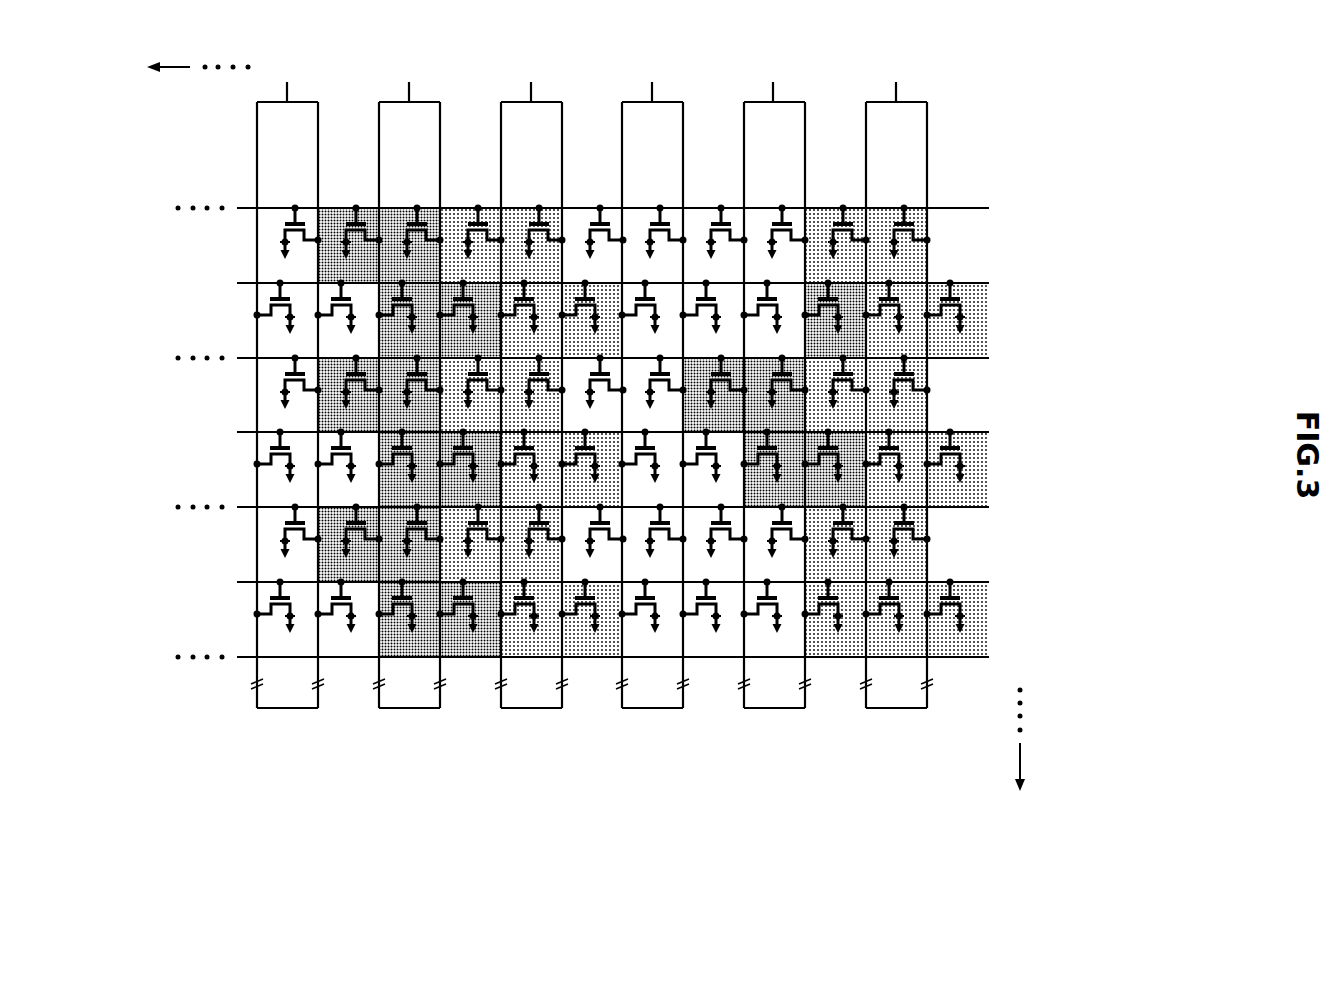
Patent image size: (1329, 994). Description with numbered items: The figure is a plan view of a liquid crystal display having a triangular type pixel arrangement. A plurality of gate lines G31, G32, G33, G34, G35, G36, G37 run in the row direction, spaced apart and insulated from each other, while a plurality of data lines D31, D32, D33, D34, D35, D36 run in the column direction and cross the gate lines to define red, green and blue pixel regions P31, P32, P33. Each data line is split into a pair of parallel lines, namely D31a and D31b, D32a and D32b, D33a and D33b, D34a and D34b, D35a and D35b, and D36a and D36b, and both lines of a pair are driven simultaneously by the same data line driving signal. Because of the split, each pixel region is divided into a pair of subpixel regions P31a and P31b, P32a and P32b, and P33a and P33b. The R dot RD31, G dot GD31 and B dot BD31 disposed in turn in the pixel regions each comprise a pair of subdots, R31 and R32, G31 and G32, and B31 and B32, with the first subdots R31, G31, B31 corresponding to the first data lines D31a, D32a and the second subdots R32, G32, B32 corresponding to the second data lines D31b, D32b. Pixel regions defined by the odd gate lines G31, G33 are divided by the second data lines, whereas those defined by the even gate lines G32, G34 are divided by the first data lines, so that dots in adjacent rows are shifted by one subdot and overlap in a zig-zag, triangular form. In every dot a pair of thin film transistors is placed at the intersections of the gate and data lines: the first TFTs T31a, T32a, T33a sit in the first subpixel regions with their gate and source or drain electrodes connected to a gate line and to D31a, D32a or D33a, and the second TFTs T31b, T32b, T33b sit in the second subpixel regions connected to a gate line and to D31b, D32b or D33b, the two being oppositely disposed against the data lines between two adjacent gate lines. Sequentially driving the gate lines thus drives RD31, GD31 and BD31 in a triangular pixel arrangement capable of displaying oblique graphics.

The data line D31 is at (896, 378).
The data line D32 is at (774, 378).
The data line D33 is at (652, 378).
The data line D34 is at (531, 378).
The data line D35 is at (409, 378).
The data line D36 is at (287, 378).
The first data line D31a is at (926, 153).
The second data line D31b is at (864, 127).
The first data line D32a is at (804, 153).
The second data line D32b is at (742, 127).
The first data line D33a is at (682, 153).
The second data line D33b is at (621, 127).
The first data line D34a is at (561, 153).
The second data line D34b is at (499, 127).
The first data line D35a is at (439, 153).
The second data line D35b is at (377, 127).
The first data line D36a is at (317, 153).
The second data line D36b is at (255, 127).
The gate line G31 is at (609, 276).
The gate line G32 is at (639, 308).
The gate line G33 is at (609, 359).
The gate line G34 is at (639, 433).
The gate line G35 is at (609, 508).
The gate line G36 is at (639, 583).
The gate line G37 is at (609, 658).
The first TFT T31a is at (887, 217).
The second TFT T31b is at (825, 217).
The first TFT T32a is at (764, 217).
The second TFT T32b is at (703, 217).
The first TFT T33a is at (642, 217).
The second TFT T33b is at (581, 217).
The first B subdot B31 is at (643, 308).
The second B subdot B32 is at (582, 308).
The first R subdot R31 is at (887, 308).
The second R subdot R32 is at (826, 308).
The B dot BD31 is at (700, 362).
The R dot RD31 is at (895, 347).
The G dot GD31 is at (810, 378).
The pixel column P31 is at (558, 805).
The pixel column P32 is at (413, 805).
The pixel column P33 is at (270, 805).
The sub-pixel column P31a is at (590, 657).
The sub-pixel column P31b is at (540, 657).
The sub-pixel column P32a is at (467, 657).
The sub-pixel column P32b is at (413, 657).
The sub-pixel column P33a is at (350, 657).
The sub-pixel column P33b is at (293, 657).